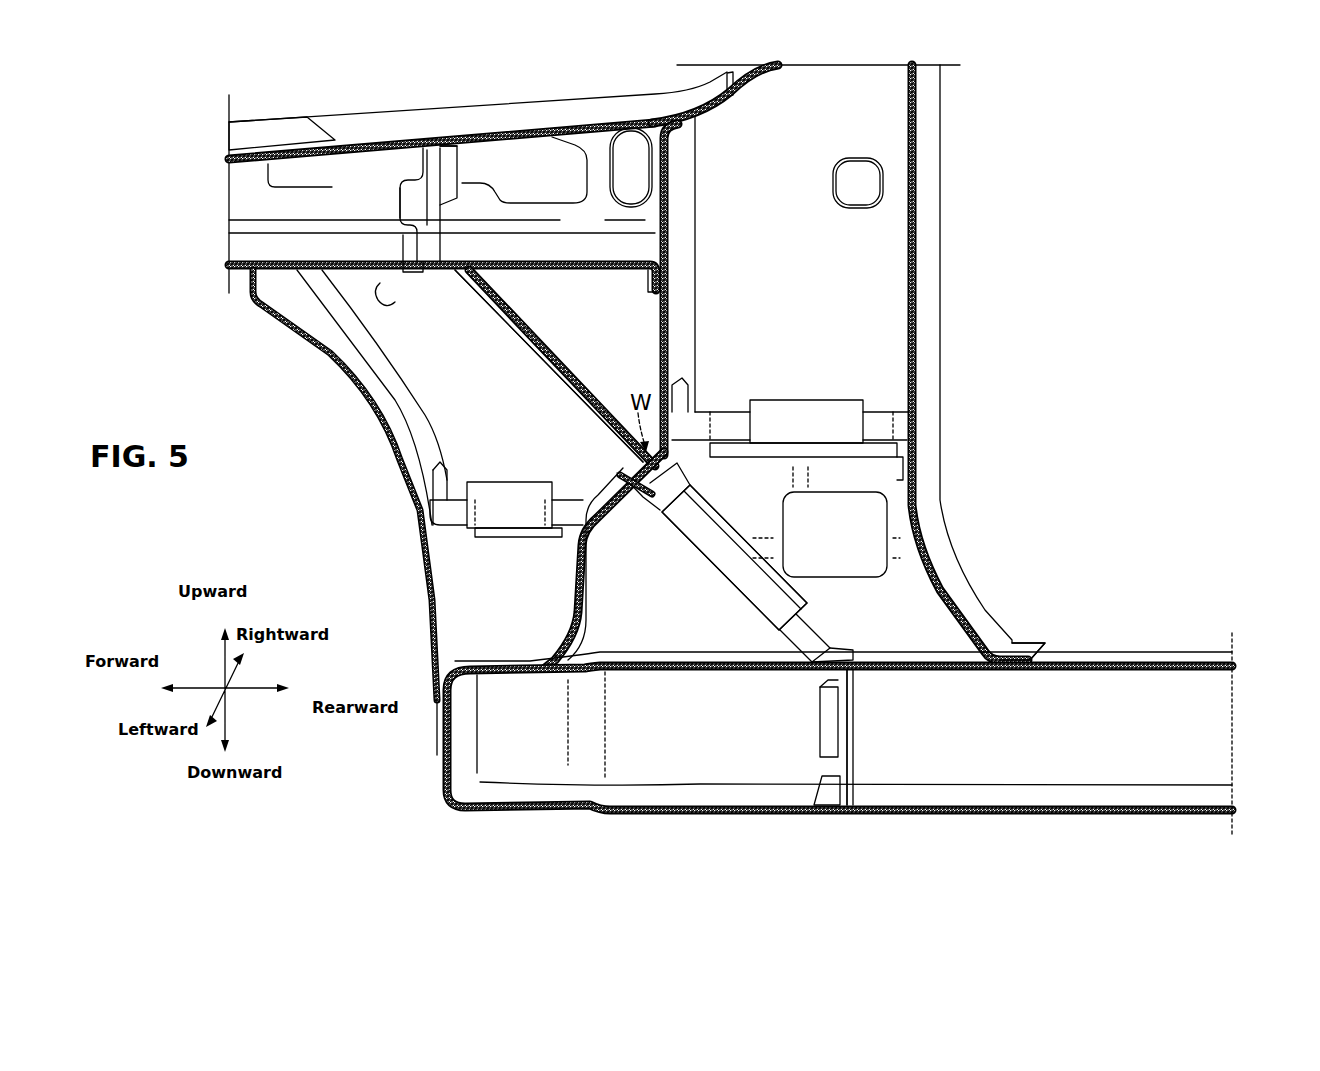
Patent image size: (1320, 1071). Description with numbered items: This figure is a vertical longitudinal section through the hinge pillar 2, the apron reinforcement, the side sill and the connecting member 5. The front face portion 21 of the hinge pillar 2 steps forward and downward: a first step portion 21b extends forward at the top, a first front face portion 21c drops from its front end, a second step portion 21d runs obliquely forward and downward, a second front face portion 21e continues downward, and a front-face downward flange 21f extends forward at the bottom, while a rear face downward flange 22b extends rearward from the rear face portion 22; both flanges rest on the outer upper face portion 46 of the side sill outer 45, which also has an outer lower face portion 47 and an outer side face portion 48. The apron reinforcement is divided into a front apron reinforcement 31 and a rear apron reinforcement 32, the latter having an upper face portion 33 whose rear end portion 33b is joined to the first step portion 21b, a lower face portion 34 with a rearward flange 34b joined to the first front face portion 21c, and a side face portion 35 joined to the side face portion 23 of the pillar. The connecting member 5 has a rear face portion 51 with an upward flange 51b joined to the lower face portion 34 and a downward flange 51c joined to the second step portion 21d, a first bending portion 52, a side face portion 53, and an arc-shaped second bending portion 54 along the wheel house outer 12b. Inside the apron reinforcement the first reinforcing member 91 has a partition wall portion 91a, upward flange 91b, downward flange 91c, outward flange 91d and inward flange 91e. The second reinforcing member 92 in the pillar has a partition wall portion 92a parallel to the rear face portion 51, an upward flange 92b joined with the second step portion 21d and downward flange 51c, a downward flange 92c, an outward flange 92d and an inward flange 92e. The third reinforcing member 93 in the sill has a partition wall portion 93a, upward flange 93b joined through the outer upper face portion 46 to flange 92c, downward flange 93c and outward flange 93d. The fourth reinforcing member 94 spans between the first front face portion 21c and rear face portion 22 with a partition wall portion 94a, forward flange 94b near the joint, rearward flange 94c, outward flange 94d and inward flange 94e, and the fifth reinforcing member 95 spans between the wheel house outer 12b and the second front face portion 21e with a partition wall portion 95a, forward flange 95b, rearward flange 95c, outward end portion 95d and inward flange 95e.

The hinge pillar 2 is at (935, 178).
The connecting member 5 is at (483, 288).
The wheel house outer 12b is at (370, 400).
The front face portion 21 is at (680, 252).
The first step portion 21b is at (763, 68).
The first front face portion 21c is at (680, 192).
The second step portion 21d is at (597, 517).
The second front face portion 21e is at (587, 580).
The front-face downward flange 21f is at (535, 657).
The rear face portion 22 is at (928, 320).
The rear face downward flange 22b is at (1027, 643).
The side face portion 23 is at (808, 193).
The front apron reinforcement 31 is at (260, 132).
The rear apron reinforcement 32 is at (387, 112).
The upper face portion 33 is at (580, 98).
The rear end portion 33b is at (697, 80).
The lower face portion 34 is at (522, 272).
The rearward flange 34b is at (647, 283).
The side face portion 35 is at (442, 219).
The side sill outer 45 is at (1163, 647).
The outer upper face portion 46 is at (1103, 658).
The outer lower face portion 47 is at (1003, 793).
The outer side face portion 48 is at (1093, 730).
The rear face portion 51 is at (532, 350).
The upward flange 51b is at (383, 283).
The downward flange 51c is at (620, 473).
The first bending portion 52 is at (572, 373).
The side face portion 53 is at (495, 390).
The second bending portion 54 is at (327, 350).
The first reinforcing member 91 is at (378, 210).
The partition wall portion 91a is at (433, 178).
The upward flange 91b is at (445, 123).
The downward flange 91c is at (413, 255).
The outward flange 91d is at (453, 160).
The inward flange 91e is at (407, 198).
The second reinforcing member 92 is at (700, 583).
The partition wall portion 92a is at (813, 620).
The upward flange 92b is at (640, 503).
The downward flange 92c is at (858, 641).
The outward flange 92d is at (720, 578).
The inward flange 92e is at (750, 557).
The third reinforcing member 93 is at (790, 708).
The partition wall portion 93a is at (855, 723).
The upward flange 93b is at (823, 675).
The downward flange 93c is at (820, 775).
The outward flange 93d is at (827, 723).
The fourth reinforcing member 94 is at (782, 383).
The partition wall portion 94a is at (723, 423).
The forward flange 94b is at (680, 405).
The rearward flange 94c is at (893, 467).
The outward flange 94d is at (773, 460).
The inward flange 94e is at (820, 392).
The fifth reinforcing member 95 is at (455, 540).
The partition wall portion 95a is at (478, 480).
The forward flange 95b is at (453, 490).
The rearward flange 95c is at (565, 540).
The outward end portion 95d is at (495, 537).
The inward flange 95e is at (518, 480).